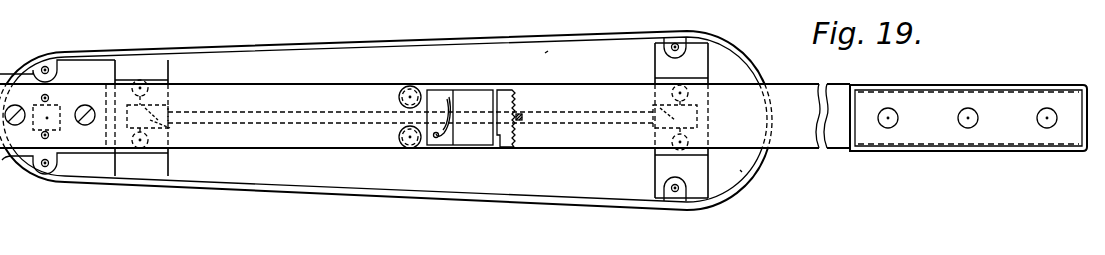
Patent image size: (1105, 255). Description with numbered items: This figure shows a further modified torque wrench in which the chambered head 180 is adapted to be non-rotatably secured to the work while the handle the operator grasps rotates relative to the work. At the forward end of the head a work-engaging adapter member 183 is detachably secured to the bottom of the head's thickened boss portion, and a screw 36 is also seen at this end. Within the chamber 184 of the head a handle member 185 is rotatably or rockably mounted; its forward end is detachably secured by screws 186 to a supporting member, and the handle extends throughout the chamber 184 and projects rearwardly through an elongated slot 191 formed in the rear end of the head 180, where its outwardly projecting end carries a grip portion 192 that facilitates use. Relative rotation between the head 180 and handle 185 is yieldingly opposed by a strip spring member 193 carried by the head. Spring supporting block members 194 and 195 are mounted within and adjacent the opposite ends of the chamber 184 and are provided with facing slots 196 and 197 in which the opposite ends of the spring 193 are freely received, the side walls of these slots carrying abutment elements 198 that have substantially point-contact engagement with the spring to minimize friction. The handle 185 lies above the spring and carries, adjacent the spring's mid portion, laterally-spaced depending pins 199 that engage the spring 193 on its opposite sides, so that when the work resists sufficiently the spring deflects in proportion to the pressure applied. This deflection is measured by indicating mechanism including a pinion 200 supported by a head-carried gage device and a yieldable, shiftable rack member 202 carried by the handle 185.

The screw 36 is at (11, 106).
The chambered head 180 is at (433, 28).
The work-engaging adapter member 183 is at (58, 100).
The chamber 184 is at (545, 53).
The handle member 185 is at (828, 151).
The screws 186 is at (85, 126).
The elongated slot 191 is at (750, 170).
The grip portion 192 is at (968, 118).
The strip spring member 193 is at (352, 117).
The spring supporting block member 194 is at (152, 76).
The spring supporting block member 195 is at (656, 78).
The slot 196 is at (170, 104).
The slot 197 is at (655, 108).
The abutment elements 198 is at (172, 128).
The depending pins 199 is at (400, 128).
The pinion 200 is at (521, 113).
The rack member 202 is at (505, 141).